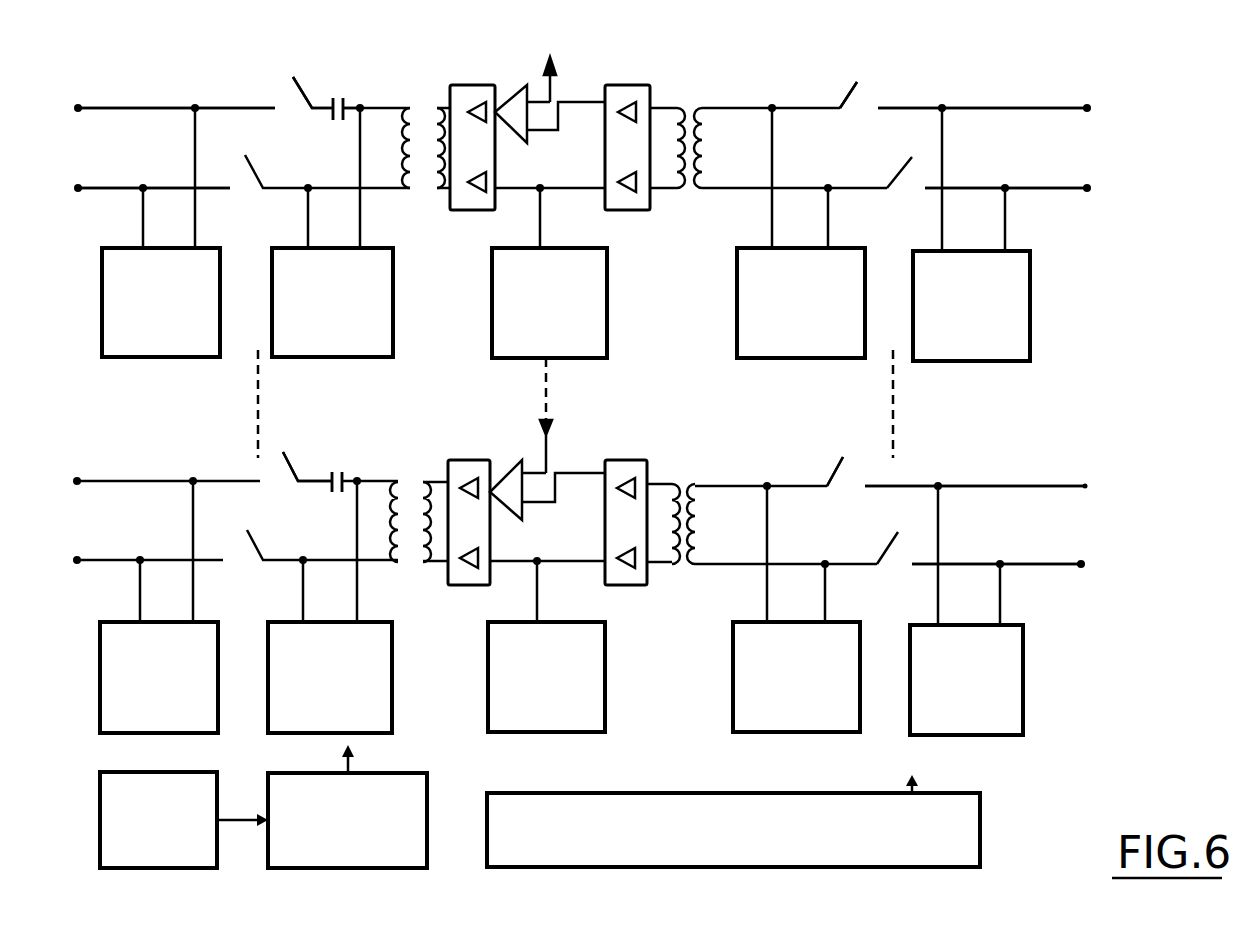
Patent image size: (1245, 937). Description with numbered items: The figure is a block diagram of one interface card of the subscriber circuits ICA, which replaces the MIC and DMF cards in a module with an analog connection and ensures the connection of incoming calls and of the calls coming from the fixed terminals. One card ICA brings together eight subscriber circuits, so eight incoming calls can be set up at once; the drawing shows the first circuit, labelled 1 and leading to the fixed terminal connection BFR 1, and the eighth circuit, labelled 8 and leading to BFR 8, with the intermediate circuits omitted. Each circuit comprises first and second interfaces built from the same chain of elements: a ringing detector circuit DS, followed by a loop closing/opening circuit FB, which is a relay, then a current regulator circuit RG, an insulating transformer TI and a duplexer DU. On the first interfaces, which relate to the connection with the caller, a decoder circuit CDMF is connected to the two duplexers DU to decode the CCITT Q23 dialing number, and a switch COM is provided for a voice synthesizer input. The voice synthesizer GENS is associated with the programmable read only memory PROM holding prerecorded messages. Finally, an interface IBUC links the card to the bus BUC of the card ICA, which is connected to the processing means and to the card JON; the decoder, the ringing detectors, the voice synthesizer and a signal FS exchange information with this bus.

The interface card of the subscriber circuits ICA is at (204, 84).
The line number 1 is at (128, 158).
The line number 8 is at (131, 526).
The loop closing/opening circuit FB is at (318, 86).
The isolation transformer TI is at (437, 95).
The duplexer DU is at (474, 85).
The switch for a voice synthesizer input COM is at (513, 130).
The ringing detector circuit DS is at (102, 318).
The current regulator circuit RG is at (393, 325).
The decoder circuit CDMF is at (607, 310).
The bus interface 1 BFR 1 is at (1010, 148).
The bus interface 8 BFR 8 is at (995, 525).
The programmable read only memory PROM is at (184, 820).
The voice synthesizer GENS is at (417, 870).
The bus BUC is at (733, 830).
The interface with the bus IBUC is at (980, 825).
The frame signal FS is at (914, 774).